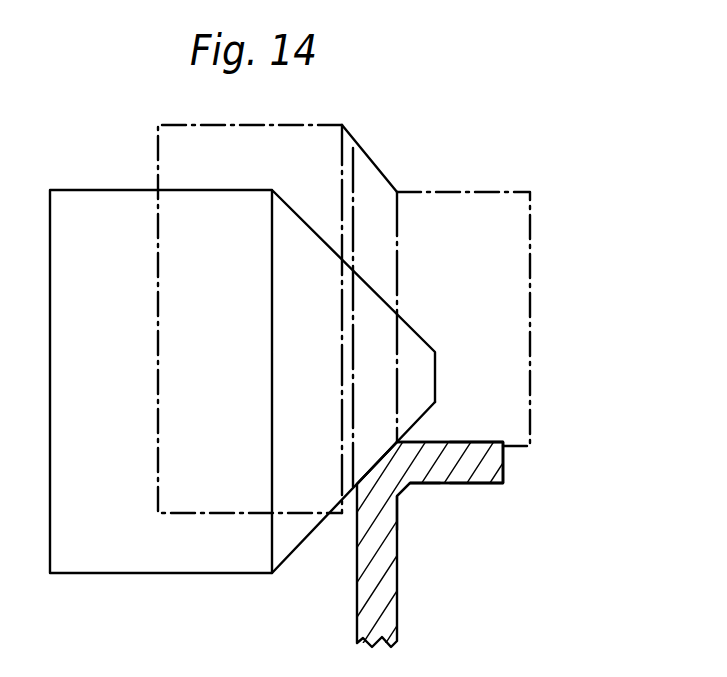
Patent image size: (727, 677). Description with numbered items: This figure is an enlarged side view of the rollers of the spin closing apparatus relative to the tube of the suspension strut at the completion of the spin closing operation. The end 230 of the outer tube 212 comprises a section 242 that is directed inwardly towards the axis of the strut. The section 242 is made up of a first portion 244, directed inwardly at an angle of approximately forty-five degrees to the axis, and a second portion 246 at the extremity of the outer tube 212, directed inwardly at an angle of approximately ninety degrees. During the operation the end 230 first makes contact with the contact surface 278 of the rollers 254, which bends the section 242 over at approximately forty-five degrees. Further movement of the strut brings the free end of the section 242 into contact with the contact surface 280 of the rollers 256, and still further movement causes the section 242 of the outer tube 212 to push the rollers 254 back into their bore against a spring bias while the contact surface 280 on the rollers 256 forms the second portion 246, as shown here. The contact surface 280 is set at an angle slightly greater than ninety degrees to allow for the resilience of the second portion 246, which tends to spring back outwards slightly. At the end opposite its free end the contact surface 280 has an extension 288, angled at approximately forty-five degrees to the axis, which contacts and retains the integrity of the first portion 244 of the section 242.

The outer tube 212 is at (376, 619).
The end of the outer tube 230 is at (525, 472).
The section of the outer tube 242 is at (467, 507).
The first portion 244 is at (383, 482).
The second portion 246 is at (477, 477).
The rollers 254 is at (188, 560).
The rollers 256 is at (303, 138).
The contact surface 278 is at (303, 543).
The contact surface 280 is at (460, 187).
The extension 288 is at (373, 168).